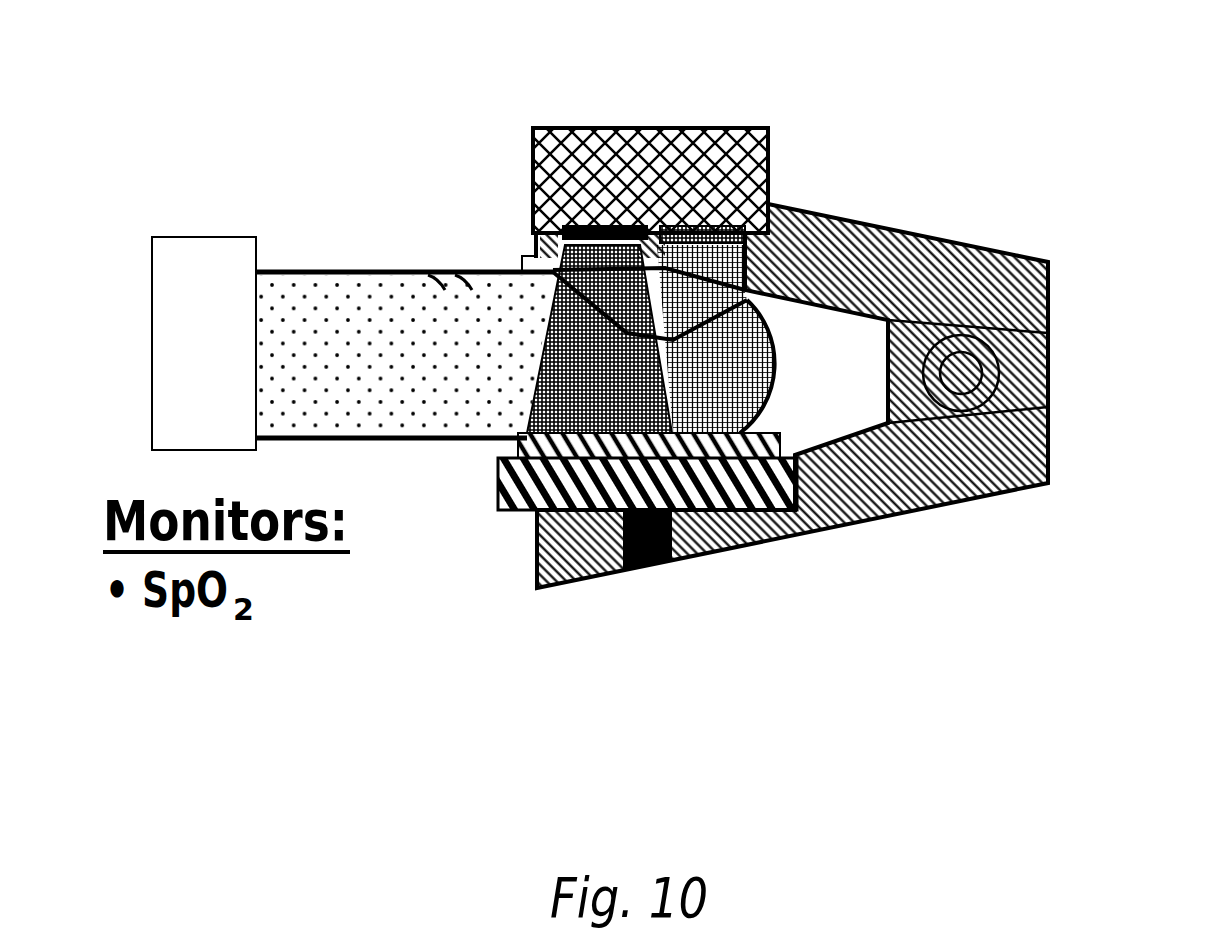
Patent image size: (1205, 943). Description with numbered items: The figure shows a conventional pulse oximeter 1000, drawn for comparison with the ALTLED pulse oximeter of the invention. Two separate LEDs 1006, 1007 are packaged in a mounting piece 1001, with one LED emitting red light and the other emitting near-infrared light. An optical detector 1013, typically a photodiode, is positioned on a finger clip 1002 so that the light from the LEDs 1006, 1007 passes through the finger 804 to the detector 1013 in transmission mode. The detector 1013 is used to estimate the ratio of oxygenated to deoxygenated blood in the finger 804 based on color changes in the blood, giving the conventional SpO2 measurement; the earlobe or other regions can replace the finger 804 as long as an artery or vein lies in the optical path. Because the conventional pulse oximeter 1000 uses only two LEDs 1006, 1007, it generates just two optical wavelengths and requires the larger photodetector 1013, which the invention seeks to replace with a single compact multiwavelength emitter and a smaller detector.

The conventional pulse oximeter 1000 is at (503, 740).
The mounting piece 1001 is at (641, 130).
The finger clip 1002 is at (885, 256).
The LED 1006 is at (714, 200).
The LED 1007 is at (555, 222).
The optical detector 1013 is at (718, 508).
The finger 804 is at (288, 382).